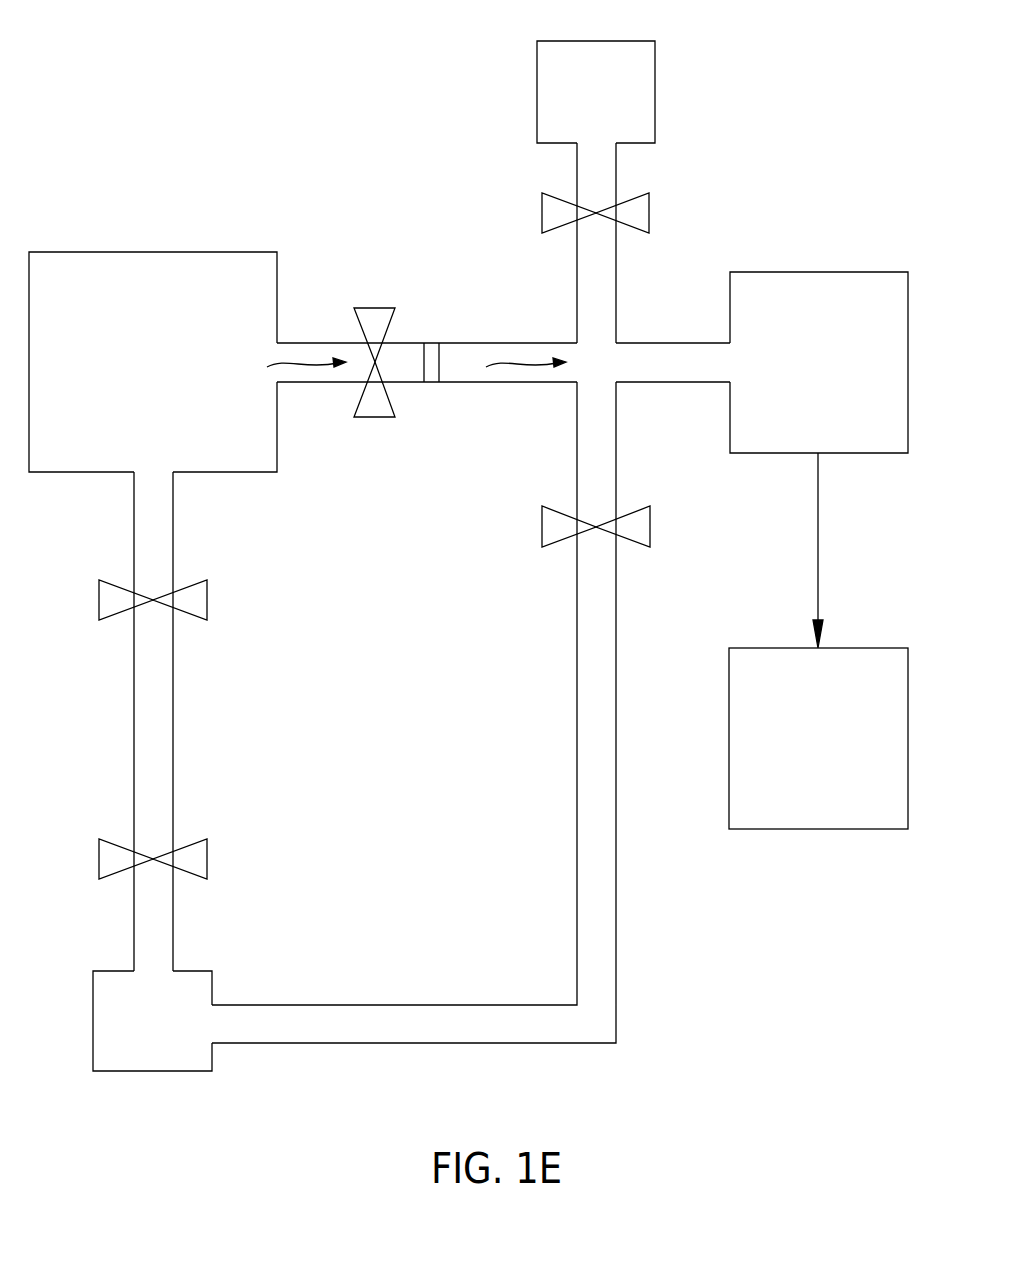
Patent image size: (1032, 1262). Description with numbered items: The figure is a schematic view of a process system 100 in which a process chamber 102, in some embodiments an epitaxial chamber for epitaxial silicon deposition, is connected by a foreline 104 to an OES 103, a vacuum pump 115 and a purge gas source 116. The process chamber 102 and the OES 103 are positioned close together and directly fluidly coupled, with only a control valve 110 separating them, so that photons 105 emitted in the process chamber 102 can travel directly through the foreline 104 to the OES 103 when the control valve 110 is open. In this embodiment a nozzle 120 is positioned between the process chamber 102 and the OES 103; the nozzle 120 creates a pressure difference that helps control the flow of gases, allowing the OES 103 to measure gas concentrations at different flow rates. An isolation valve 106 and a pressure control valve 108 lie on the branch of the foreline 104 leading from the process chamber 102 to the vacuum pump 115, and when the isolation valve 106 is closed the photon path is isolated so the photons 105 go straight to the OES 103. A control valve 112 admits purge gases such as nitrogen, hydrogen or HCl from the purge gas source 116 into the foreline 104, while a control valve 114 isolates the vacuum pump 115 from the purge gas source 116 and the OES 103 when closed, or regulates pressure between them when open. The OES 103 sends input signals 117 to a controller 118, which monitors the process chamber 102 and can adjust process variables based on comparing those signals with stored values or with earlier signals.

The process system 100 is at (177, 37).
The process chamber 102 is at (170, 380).
The OES 103 is at (832, 373).
The foreline 104 is at (576, 297).
The photons 105 is at (300, 368).
The isolation valve 106 is at (196, 620).
The pressure control valve 108 is at (208, 858).
The control valve 110 is at (375, 308).
The control valve 112 is at (651, 211).
The control valve 114 is at (638, 547).
The vacuum pump 115 is at (176, 1036).
The purge gas source 116 is at (616, 100).
The input signals 117 is at (820, 562).
The controller 118 is at (832, 743).
The nozzle 120 is at (434, 383).